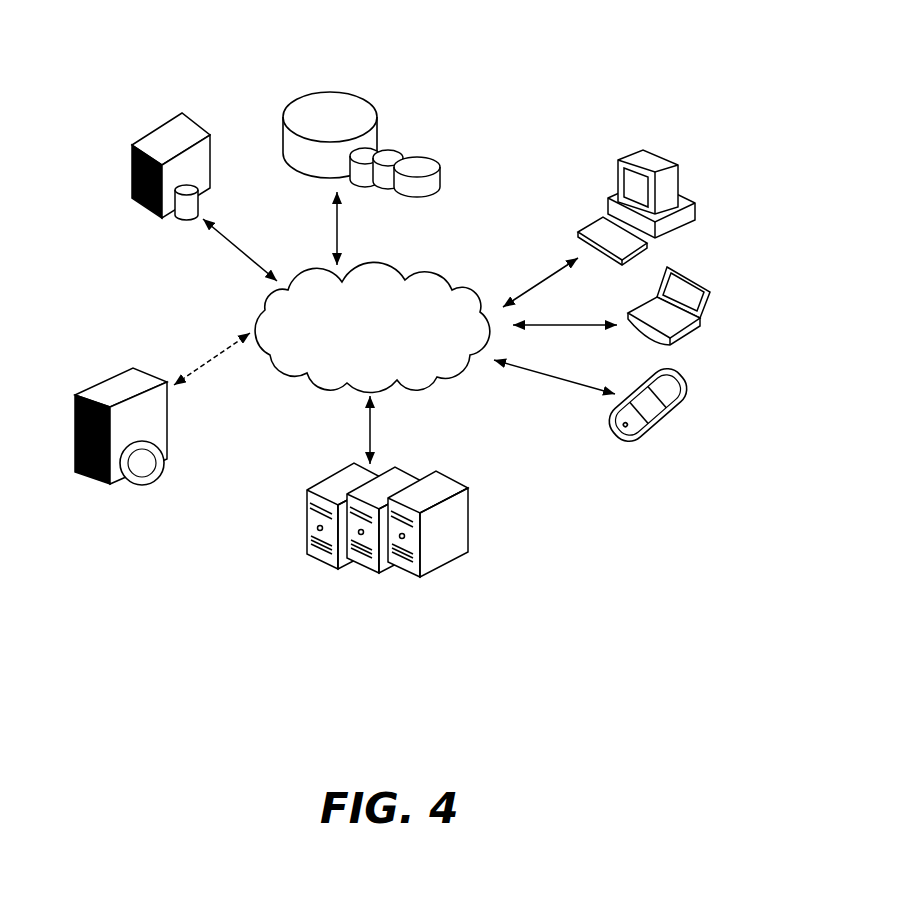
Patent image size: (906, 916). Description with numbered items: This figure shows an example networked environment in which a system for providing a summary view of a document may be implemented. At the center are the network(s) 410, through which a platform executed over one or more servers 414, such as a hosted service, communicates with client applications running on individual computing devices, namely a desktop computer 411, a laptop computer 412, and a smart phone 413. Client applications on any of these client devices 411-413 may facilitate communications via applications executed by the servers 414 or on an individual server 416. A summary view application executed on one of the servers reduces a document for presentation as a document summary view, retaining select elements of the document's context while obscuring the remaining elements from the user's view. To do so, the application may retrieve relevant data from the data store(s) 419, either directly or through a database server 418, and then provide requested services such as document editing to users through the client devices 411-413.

The network(s) 410 is at (377, 258).
The desktop computer 411 is at (677, 141).
The laptop computer 412 is at (712, 264).
The smart phone 413 is at (691, 376).
The servers 414 is at (335, 468).
The individual server 416 is at (99, 372).
The database server 418 is at (175, 225).
The data store(s) 419 is at (347, 70).